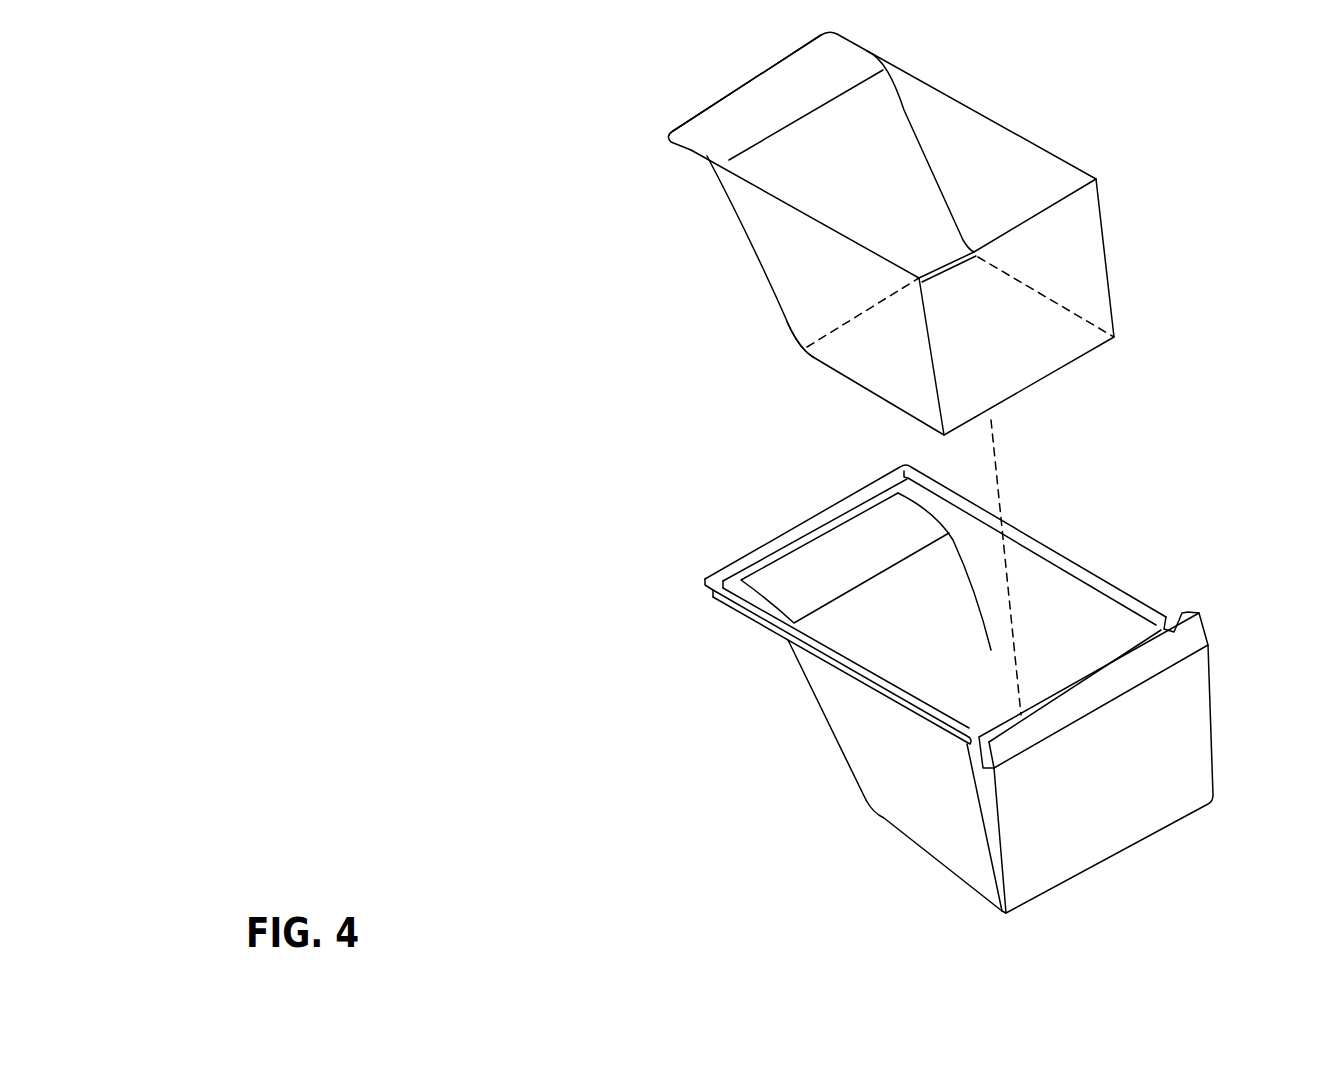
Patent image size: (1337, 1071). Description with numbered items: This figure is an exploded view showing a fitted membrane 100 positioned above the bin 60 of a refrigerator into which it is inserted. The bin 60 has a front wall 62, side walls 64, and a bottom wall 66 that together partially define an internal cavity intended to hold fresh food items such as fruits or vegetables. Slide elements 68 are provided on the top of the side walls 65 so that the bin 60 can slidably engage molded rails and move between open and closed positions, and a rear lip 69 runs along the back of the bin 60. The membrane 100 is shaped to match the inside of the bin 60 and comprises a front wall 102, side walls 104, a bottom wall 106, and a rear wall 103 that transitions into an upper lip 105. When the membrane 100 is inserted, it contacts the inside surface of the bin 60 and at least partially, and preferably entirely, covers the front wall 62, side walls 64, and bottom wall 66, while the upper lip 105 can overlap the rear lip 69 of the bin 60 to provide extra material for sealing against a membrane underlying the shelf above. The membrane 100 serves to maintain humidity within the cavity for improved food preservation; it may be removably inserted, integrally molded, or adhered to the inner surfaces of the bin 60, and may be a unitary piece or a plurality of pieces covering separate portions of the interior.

The bin 60 is at (981, 674).
The front wall 62 is at (1177, 738).
The side walls 64 is at (895, 750).
The side walls 65 is at (793, 583).
The bottom wall 66 is at (938, 852).
The slide elements 68 is at (787, 639).
The rear lip 69 is at (870, 485).
The membrane 100 is at (903, 371).
The front wall 102 is at (1067, 263).
The rear wall 103 is at (842, 172).
The side walls 104 is at (987, 161).
The lip 105 is at (736, 124).
The bottom wall 106 is at (842, 360).